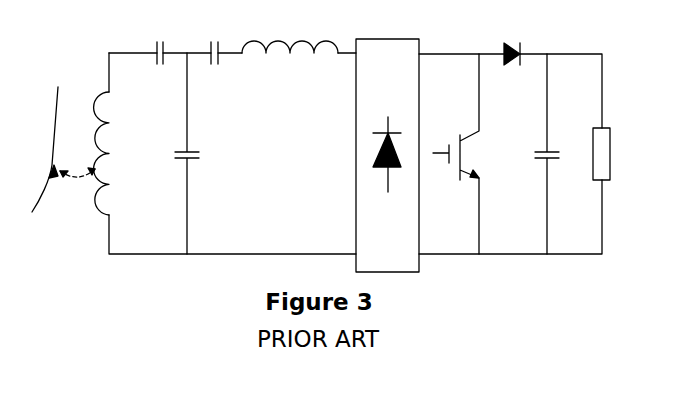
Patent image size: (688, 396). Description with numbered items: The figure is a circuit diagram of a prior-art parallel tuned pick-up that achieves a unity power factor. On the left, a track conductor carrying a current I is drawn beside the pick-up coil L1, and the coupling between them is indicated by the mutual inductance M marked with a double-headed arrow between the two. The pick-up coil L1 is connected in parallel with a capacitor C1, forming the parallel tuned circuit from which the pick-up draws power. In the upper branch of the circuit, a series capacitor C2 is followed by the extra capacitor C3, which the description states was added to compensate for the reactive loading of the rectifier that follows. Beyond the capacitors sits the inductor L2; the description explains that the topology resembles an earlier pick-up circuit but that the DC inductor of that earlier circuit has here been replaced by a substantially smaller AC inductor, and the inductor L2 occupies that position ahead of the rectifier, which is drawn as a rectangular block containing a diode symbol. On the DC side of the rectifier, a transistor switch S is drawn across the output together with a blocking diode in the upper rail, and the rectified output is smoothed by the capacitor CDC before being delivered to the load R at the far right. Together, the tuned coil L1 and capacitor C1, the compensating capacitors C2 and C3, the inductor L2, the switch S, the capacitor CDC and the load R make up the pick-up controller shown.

The primary current I is at (44, 149).
The mutual inductance M is at (77, 159).
The pickup coil inductor L1 is at (115, 153).
The parallel tuning capacitor C1 is at (198, 153).
The series capacitor C2 is at (159, 70).
The extra capacitor C3 is at (213, 70).
The DC inductor L2 is at (290, 72).
The switch (IGBT) S is at (456, 154).
The DC capacitor CDC is at (530, 154).
The load resistor R is at (593, 154).